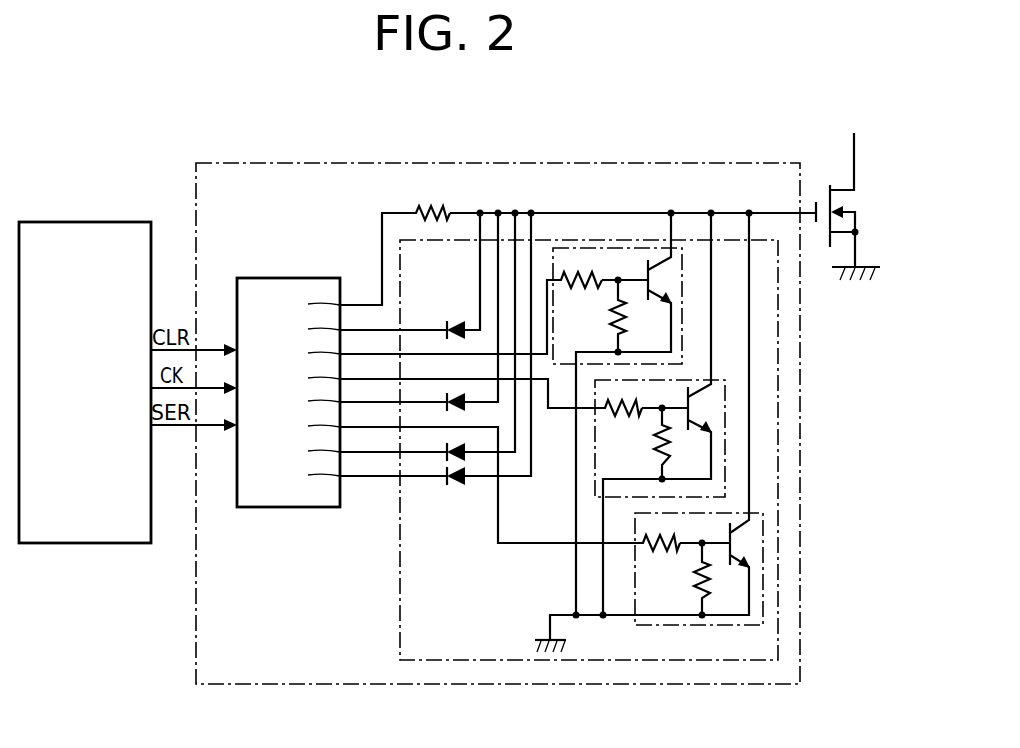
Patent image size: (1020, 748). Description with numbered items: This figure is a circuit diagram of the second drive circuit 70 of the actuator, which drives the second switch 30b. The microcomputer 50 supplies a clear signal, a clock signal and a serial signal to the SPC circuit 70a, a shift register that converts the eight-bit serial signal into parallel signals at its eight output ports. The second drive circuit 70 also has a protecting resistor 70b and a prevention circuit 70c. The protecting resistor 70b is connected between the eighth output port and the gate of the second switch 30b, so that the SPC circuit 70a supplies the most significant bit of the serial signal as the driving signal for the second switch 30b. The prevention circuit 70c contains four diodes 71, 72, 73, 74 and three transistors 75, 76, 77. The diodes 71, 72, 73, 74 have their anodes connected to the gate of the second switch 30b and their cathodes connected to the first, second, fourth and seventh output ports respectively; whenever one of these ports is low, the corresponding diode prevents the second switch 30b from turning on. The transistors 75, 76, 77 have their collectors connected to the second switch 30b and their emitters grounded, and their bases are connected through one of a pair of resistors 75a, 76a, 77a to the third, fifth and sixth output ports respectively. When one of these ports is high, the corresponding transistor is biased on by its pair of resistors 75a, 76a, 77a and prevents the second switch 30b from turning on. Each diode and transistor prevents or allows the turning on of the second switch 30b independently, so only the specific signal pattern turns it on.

The microcomputer 50 is at (123, 221).
The second drive circuit 70 is at (577, 156).
The SPC circuit 70a is at (291, 277).
The protecting resistor 70b is at (430, 203).
The prevention circuit 70c is at (393, 572).
The diode 71 is at (467, 483).
The diode 72 is at (461, 440).
The diode 73 is at (467, 409).
The diode 74 is at (461, 327).
The transistor 75 is at (743, 547).
The pair of resistors 75a is at (683, 585).
The transistor 76 is at (712, 410).
The pair of resistors 76a is at (620, 397).
The transistor 77 is at (670, 283).
The pair of resistors 77a is at (587, 270).
The second switch 30b is at (852, 197).